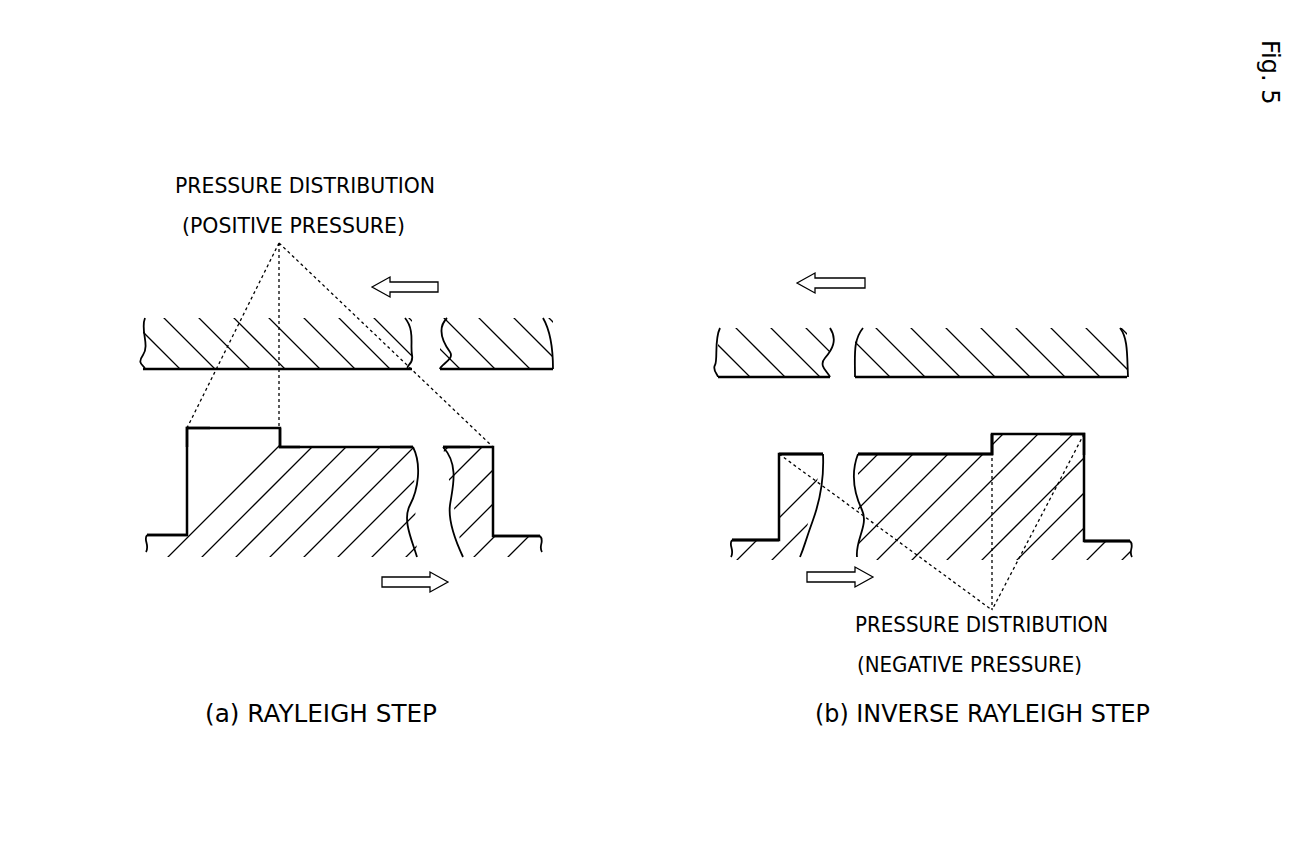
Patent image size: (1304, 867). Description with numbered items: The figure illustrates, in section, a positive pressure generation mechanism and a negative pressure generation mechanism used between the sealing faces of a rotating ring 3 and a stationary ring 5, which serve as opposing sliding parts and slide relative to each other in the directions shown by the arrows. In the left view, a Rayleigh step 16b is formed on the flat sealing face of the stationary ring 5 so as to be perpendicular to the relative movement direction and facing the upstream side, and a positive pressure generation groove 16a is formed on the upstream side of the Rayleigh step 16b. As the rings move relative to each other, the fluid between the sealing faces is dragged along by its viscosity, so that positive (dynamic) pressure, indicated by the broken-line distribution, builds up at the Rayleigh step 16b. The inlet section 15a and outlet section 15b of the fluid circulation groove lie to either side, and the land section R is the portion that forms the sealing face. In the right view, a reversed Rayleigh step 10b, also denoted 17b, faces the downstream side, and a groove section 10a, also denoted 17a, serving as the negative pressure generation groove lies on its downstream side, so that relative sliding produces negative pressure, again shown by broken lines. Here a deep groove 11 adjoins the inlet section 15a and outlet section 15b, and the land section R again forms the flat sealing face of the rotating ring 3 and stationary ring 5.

The rotating ring 3 is at (178, 312).
The stationary ring 5 is at (287, 553).
The land section R is at (187, 428).
The inlet section 15a is at (540, 537).
The outlet section 15b is at (150, 535).
The positive pressure generation groove 16a is at (397, 447).
The Rayleigh step 16b is at (280, 447).
The groove section 10a is at (875, 452).
The reversed Rayleigh step 10b is at (992, 434).
The groove section 17a is at (760, 438).
The reversed Rayleigh step 17b is at (922, 435).
The deep groove 11 is at (1098, 541).